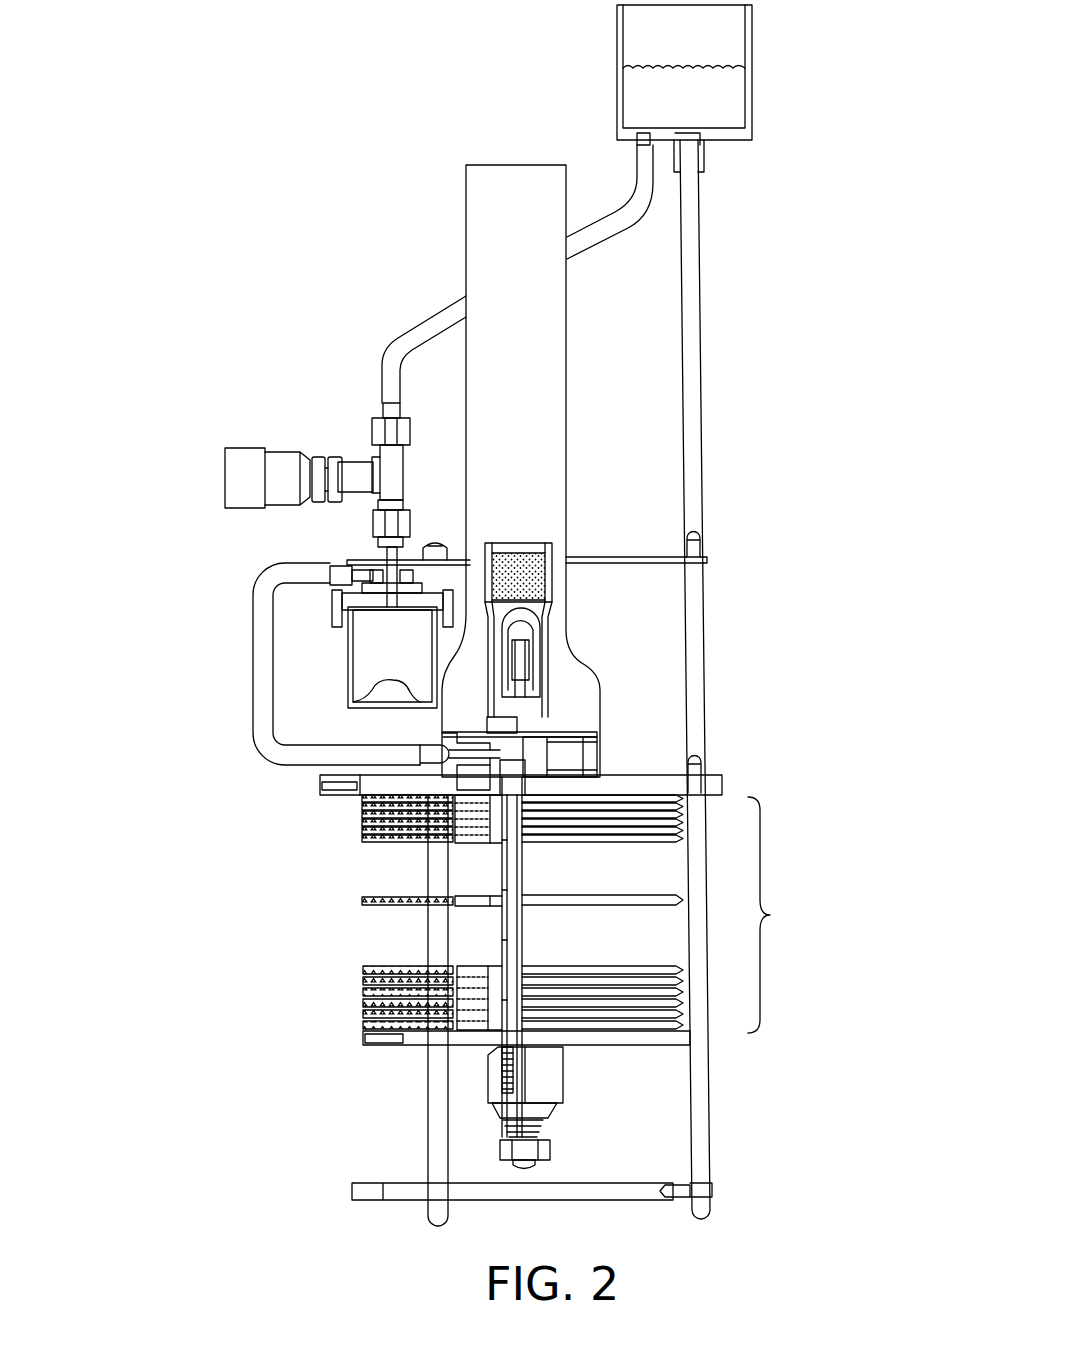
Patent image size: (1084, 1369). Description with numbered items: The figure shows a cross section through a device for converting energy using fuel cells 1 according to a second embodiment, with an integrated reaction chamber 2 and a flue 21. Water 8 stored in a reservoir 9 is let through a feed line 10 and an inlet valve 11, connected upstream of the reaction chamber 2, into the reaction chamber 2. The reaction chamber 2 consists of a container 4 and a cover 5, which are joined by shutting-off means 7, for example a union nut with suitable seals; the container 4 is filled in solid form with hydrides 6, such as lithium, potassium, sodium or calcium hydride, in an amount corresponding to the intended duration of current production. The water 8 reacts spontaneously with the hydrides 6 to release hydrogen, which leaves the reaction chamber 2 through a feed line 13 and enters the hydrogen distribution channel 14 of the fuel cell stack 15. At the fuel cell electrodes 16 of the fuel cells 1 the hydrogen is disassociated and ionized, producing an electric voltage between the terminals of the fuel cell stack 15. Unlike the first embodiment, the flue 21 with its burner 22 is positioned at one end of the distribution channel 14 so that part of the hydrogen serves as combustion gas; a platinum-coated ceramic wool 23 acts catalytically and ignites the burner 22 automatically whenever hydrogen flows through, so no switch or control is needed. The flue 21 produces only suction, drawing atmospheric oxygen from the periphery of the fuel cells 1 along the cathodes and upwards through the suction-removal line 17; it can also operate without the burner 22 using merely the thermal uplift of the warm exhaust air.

The fuel cells 1 is at (362, 837).
The reaction chamber 2 is at (424, 673).
The container 4 is at (348, 640).
The cover 5 is at (390, 610).
The hydrides 6 is at (363, 692).
The shutting-off means 7 is at (335, 612).
The water 8 is at (731, 112).
The reservoir 9 is at (750, 34).
The feed line 10 is at (392, 350).
The inlet valve 11 is at (247, 460).
The feed line 13 is at (287, 572).
The H2 distribution channel 14 is at (513, 883).
The fuel cell stack 15 is at (777, 915).
The fuel cell electrodes 16 is at (600, 895).
The suction-removal line 17 is at (457, 838).
The flue 21 is at (567, 415).
The burner 22 is at (540, 635).
The ceramic wool 23 is at (550, 553).